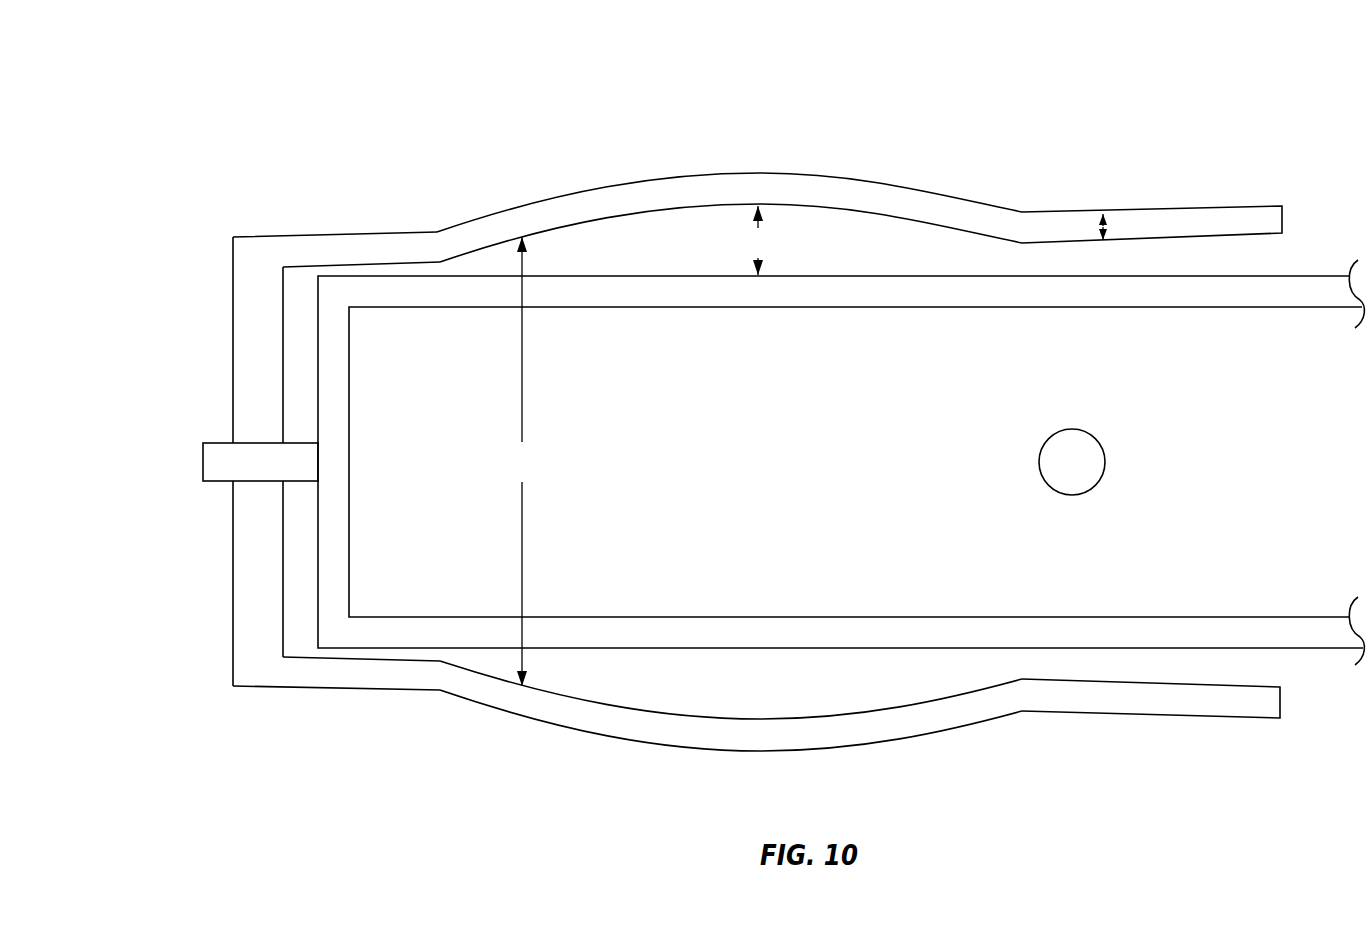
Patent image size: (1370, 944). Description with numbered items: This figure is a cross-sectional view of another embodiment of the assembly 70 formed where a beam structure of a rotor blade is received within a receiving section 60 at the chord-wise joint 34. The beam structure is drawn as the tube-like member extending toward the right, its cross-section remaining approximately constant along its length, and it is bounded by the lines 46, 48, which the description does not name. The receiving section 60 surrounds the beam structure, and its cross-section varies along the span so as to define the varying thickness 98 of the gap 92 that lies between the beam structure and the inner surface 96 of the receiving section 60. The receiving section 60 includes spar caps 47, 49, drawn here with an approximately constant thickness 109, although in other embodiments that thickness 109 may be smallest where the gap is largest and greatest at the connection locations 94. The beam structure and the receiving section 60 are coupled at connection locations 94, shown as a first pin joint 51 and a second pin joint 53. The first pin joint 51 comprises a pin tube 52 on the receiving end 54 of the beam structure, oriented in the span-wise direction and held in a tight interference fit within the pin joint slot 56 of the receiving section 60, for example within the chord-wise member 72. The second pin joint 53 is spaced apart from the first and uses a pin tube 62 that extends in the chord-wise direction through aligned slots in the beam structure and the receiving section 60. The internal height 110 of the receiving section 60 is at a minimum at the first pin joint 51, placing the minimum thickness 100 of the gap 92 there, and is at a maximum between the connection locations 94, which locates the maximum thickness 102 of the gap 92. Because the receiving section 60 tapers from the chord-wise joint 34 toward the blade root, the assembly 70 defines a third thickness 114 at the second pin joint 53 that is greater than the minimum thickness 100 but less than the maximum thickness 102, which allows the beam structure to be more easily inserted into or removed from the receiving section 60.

The chord-wise joint 34 is at (988, 84).
The assembly 70 is at (208, 126).
The minimum thickness 100 is at (364, 218).
The maximum thickness 102 is at (711, 158).
The spar cap 49 is at (1163, 207).
The spar cap thickness 109 is at (1098, 228).
The pin joint slot 56 is at (231, 421).
The chord-wise member 72 is at (233, 592).
The receiving section 60 is at (233, 668).
The spar cap 47 is at (503, 716).
The inner surface 96 is at (745, 716).
The gap 92 is at (690, 686).
The third thickness 114 is at (1045, 729).
The pin tube 52 is at (203, 472).
The first pin joint 51 is at (147, 453).
The connection location 94 is at (152, 402).
The tubular member outer wall 48 is at (863, 306).
The tubular member inner wall 46 is at (643, 618).
The receiving end 54 is at (360, 460).
The second pin joint 53 is at (1026, 444).
The pin tube 62 is at (1075, 443).
The internal height 110 is at (521, 461).
The varying thickness 98 is at (758, 240).